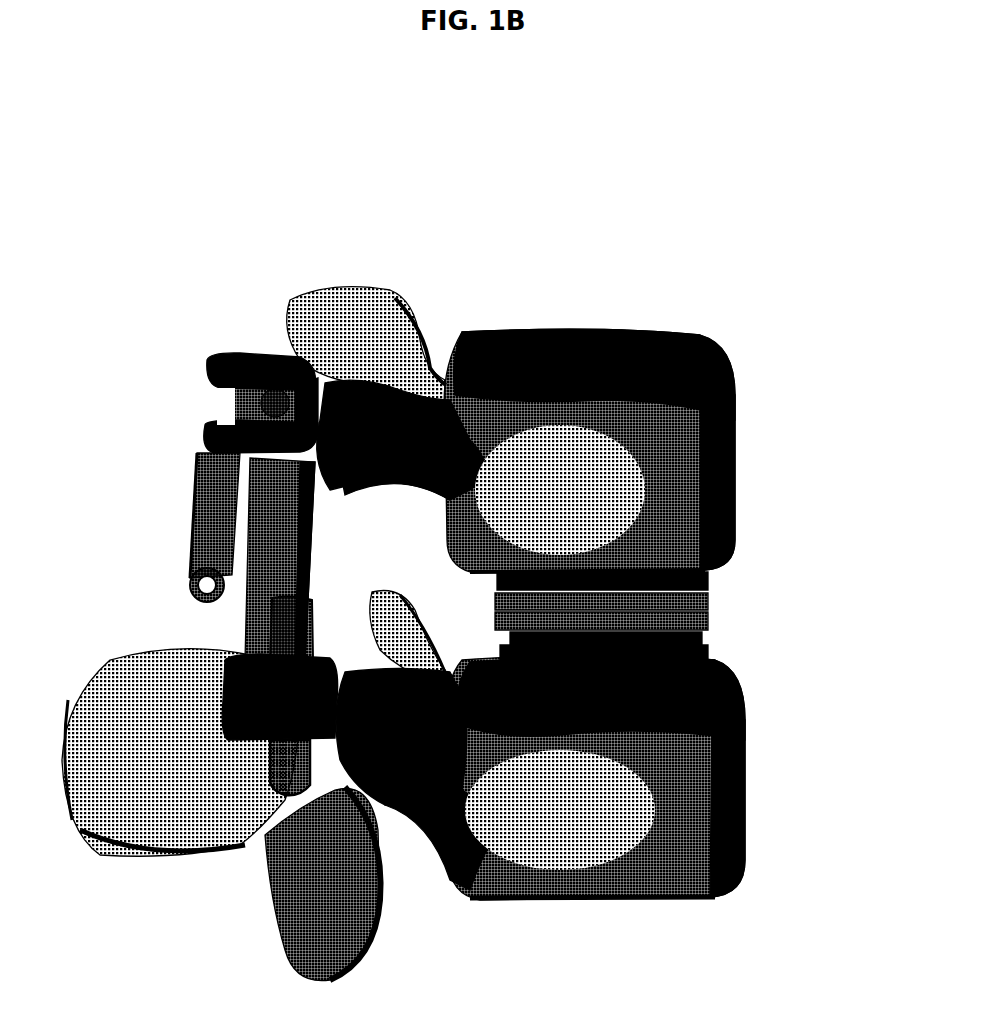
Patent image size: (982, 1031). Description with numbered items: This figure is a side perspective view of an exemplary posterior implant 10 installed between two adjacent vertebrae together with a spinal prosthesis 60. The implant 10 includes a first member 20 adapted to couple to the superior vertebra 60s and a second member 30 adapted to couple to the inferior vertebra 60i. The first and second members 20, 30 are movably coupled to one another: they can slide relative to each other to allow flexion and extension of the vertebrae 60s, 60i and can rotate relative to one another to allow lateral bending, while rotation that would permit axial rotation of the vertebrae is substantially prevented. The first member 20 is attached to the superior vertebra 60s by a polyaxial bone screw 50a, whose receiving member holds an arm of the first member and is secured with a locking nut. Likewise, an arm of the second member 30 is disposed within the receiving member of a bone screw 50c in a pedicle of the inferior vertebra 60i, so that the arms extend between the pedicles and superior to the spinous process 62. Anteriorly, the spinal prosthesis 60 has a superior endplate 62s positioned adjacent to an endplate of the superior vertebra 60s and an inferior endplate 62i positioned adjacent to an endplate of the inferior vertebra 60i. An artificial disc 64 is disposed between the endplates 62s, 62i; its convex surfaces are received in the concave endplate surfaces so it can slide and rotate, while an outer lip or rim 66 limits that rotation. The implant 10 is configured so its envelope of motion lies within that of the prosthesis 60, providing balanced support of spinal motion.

The posterior implant 10 is at (210, 548).
The first member 20 is at (205, 497).
The second member 30 is at (222, 636).
The bone screw 50a is at (235, 348).
The bone screw 50c is at (243, 752).
The spinal prosthesis 60 is at (684, 602).
The superior vertebra 60s is at (622, 475).
The inferior vertebra 60i is at (622, 793).
The spinous process 62 is at (150, 764).
The superior endplate 62s is at (706, 578).
The inferior endplate 62i is at (706, 652).
The artificial disc 64 is at (704, 626).
The outer lip or rim 66 is at (706, 603).